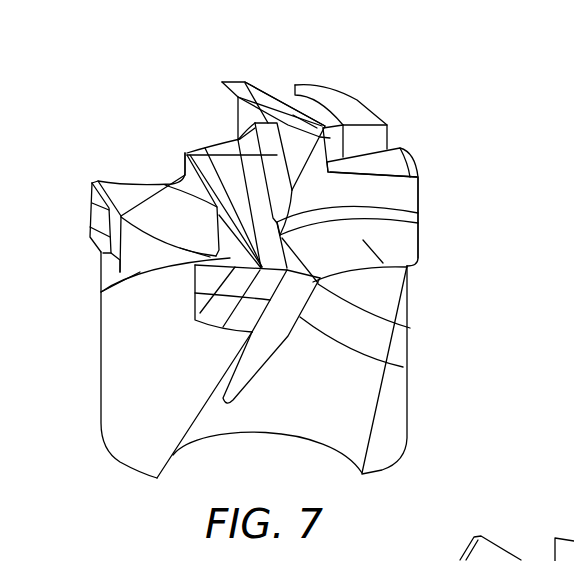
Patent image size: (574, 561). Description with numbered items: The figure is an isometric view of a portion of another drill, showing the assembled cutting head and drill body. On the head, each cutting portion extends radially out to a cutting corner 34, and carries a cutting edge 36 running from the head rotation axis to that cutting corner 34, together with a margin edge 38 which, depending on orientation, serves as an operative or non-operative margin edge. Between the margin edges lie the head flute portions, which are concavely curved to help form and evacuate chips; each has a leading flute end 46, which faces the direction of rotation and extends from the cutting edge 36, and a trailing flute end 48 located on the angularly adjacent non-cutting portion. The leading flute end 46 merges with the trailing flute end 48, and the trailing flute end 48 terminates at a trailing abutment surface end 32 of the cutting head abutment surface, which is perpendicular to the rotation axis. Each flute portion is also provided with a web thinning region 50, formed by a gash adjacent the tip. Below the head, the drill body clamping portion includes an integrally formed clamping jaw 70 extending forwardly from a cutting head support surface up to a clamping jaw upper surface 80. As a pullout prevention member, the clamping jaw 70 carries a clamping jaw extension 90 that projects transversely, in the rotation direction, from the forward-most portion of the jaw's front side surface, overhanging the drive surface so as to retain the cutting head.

The trailing abutment surface end 32 is at (397, 163).
The cutting corner 34 is at (410, 328).
The cutting edge 36 is at (418, 225).
The margin edge 38 is at (403, 367).
The leading flute end 46 is at (408, 268).
The trailing flute end 48 is at (380, 195).
The web thinning region 50 is at (186, 153).
The clamping jaw 70 is at (130, 340).
The clamping jaw upper surface 80 is at (333, 100).
The clamping jaw extension 90 is at (295, 85).